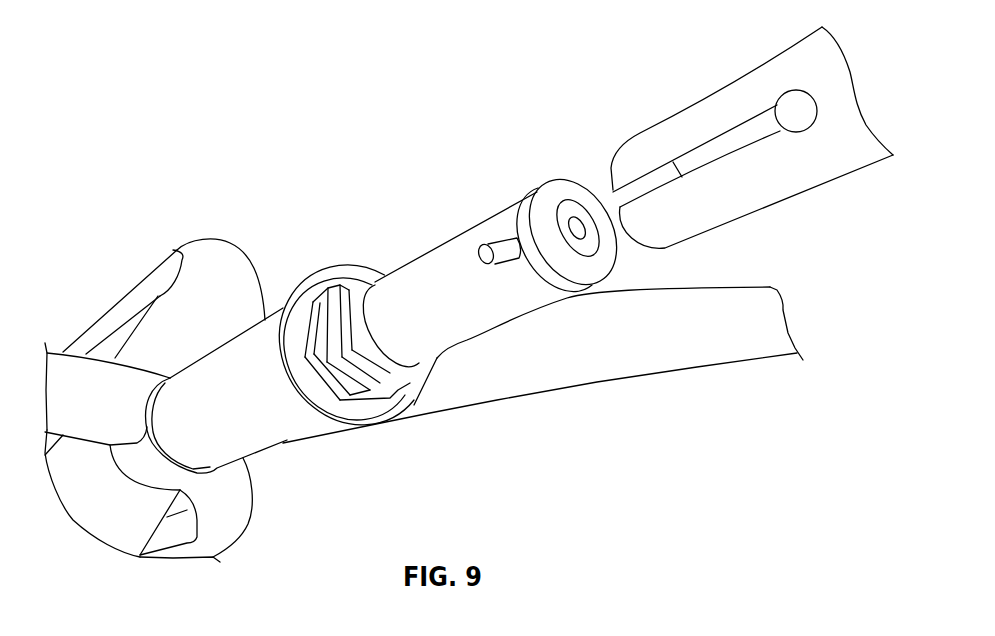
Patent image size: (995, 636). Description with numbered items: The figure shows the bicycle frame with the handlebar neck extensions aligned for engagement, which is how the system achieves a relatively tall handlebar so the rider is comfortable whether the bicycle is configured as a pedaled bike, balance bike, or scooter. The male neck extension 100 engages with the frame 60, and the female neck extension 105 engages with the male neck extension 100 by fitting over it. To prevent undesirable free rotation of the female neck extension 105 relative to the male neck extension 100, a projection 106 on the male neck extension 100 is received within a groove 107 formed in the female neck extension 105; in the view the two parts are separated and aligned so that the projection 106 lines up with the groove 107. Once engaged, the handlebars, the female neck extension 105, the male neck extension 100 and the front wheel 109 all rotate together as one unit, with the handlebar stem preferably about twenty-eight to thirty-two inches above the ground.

The male neck extension 100 is at (536, 170).
The female neck extension 105 is at (700, 108).
The projection 106 is at (483, 253).
The groove 107 is at (698, 160).
The front wheel 109 is at (226, 314).
The frame 60 is at (658, 335).